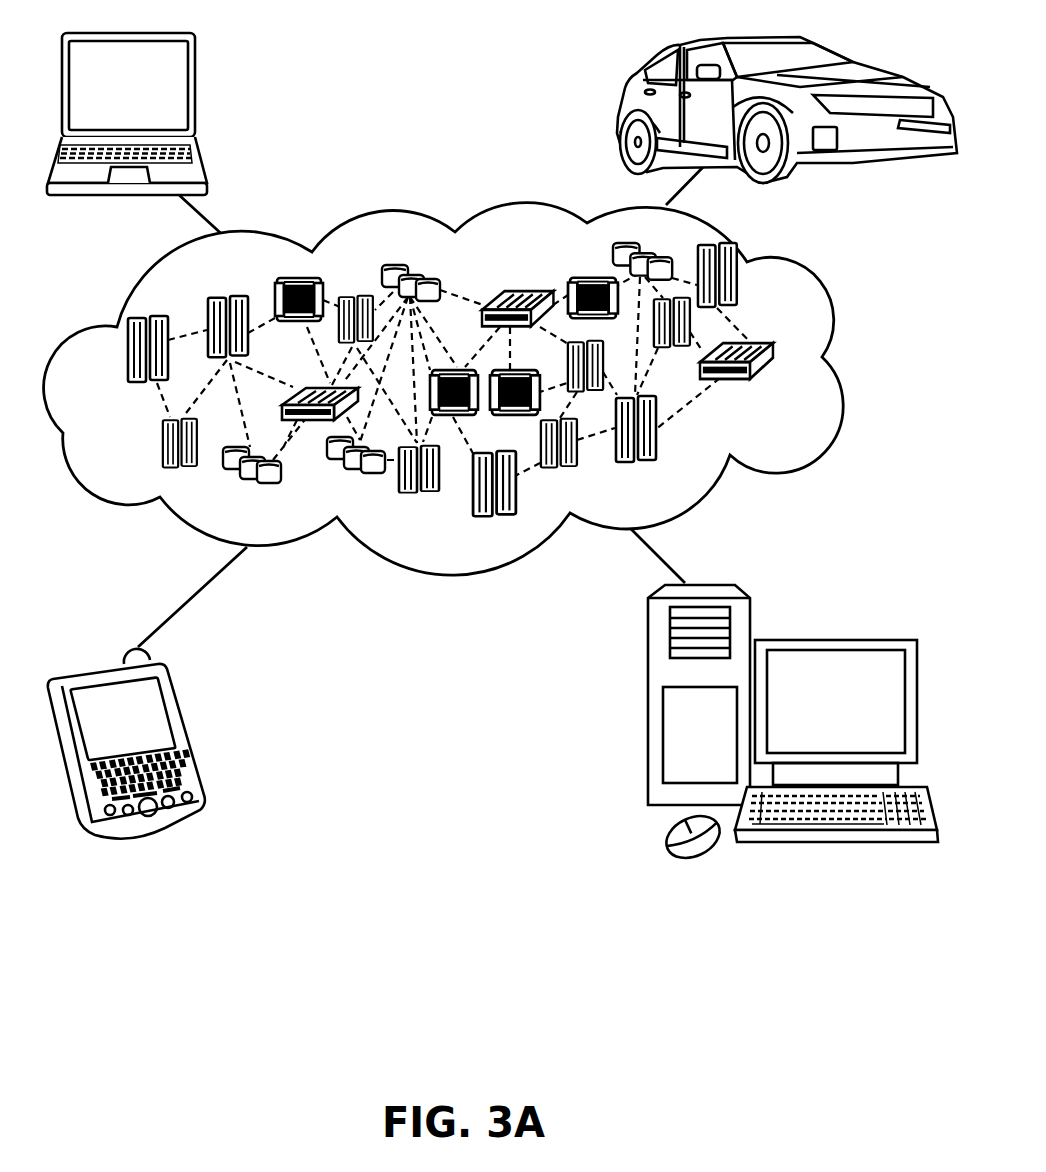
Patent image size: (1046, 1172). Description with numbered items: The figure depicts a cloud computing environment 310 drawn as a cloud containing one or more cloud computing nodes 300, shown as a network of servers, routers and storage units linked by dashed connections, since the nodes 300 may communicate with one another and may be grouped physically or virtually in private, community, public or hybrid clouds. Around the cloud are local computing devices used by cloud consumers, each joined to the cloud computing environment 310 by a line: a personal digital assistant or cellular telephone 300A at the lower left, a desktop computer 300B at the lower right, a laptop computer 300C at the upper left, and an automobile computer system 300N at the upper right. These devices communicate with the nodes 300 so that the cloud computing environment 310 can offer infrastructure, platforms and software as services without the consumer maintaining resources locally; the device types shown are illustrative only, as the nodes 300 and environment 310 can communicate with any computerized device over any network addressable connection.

The cloud computing nodes 300 is at (779, 388).
The cloud computing environment 310 is at (831, 347).
The personal digital assistant (PDA) or cellular telephone 300A is at (183, 726).
The desktop computer 300B is at (833, 640).
The laptop computer 300C is at (196, 92).
The automobile computer system 300N is at (618, 110).